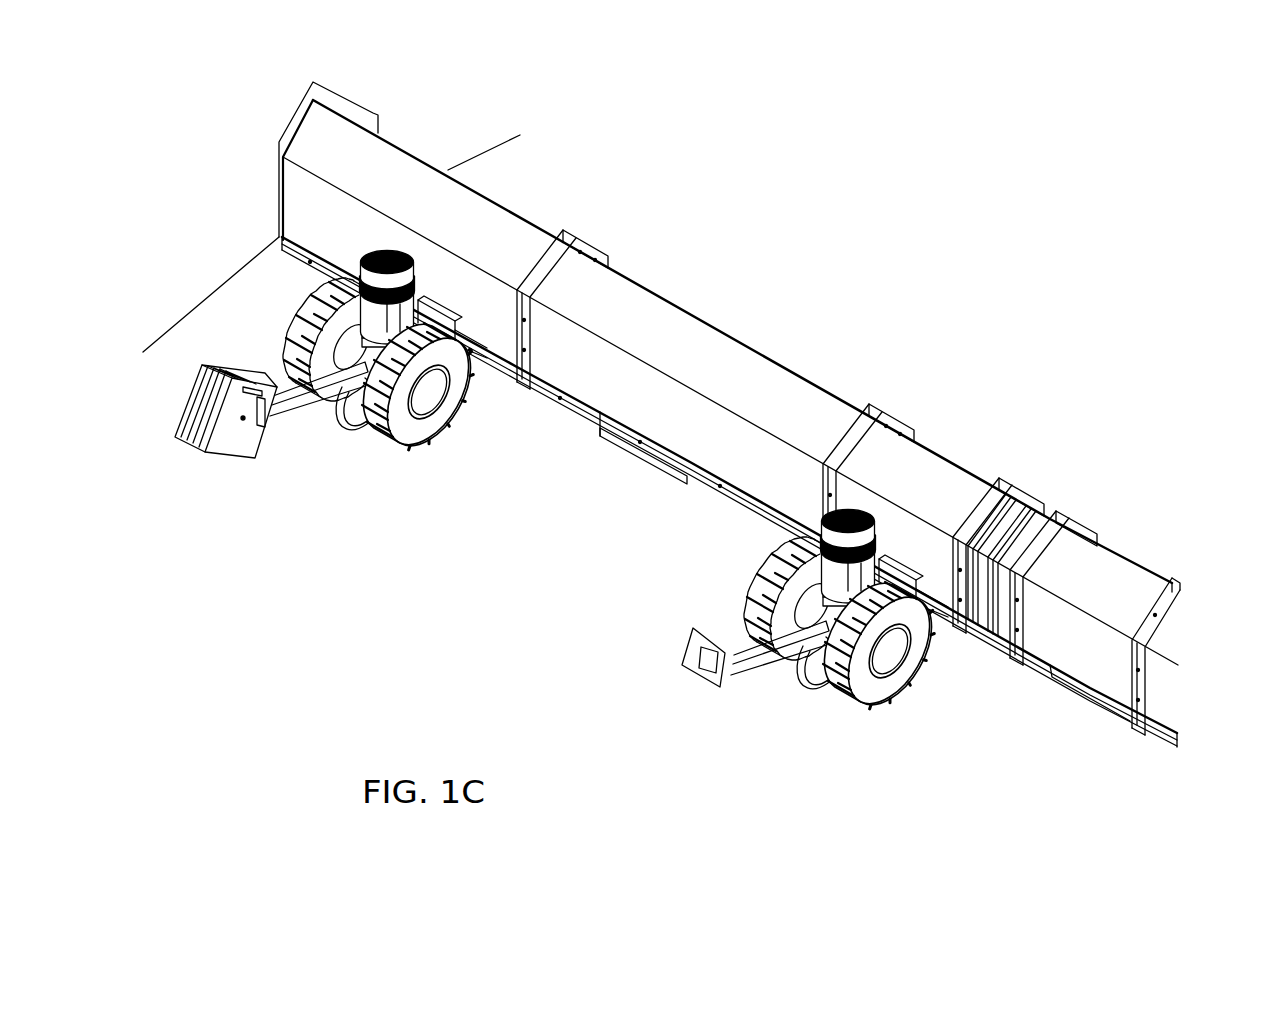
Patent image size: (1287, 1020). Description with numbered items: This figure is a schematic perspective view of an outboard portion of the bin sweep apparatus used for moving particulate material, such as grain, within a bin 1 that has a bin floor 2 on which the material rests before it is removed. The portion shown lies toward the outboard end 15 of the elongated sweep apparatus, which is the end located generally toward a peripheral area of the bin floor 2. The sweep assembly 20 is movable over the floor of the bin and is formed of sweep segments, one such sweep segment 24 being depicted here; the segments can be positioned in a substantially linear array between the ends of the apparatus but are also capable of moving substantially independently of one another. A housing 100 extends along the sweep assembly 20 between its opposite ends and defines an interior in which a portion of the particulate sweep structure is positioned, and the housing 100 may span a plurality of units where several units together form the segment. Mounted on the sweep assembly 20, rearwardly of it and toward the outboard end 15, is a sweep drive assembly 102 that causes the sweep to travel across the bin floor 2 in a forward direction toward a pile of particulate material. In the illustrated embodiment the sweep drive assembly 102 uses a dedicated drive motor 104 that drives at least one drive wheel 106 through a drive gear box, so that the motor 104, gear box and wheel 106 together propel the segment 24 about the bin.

The bin 1 is at (204, 254).
The bin floor 2 is at (478, 157).
The outboard end 15 is at (268, 127).
The sweep assembly 20 is at (845, 357).
The sweep segment 24 is at (575, 406).
The housing 100 is at (634, 319).
The sweep drive assembly 102 is at (428, 468).
The drive motor 104 is at (412, 271).
The drive wheel 106 is at (455, 415).